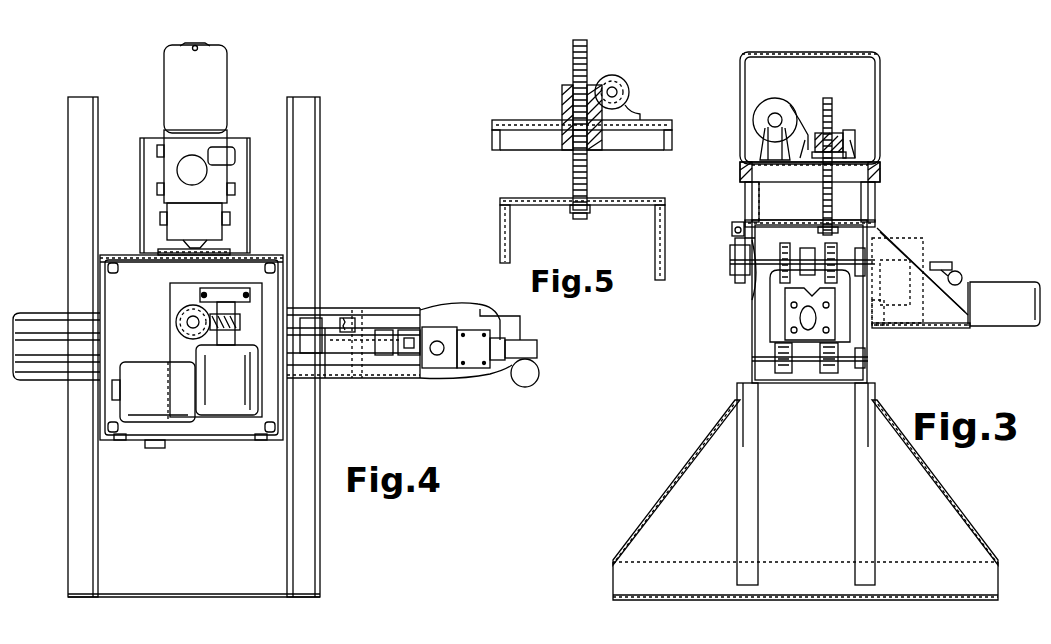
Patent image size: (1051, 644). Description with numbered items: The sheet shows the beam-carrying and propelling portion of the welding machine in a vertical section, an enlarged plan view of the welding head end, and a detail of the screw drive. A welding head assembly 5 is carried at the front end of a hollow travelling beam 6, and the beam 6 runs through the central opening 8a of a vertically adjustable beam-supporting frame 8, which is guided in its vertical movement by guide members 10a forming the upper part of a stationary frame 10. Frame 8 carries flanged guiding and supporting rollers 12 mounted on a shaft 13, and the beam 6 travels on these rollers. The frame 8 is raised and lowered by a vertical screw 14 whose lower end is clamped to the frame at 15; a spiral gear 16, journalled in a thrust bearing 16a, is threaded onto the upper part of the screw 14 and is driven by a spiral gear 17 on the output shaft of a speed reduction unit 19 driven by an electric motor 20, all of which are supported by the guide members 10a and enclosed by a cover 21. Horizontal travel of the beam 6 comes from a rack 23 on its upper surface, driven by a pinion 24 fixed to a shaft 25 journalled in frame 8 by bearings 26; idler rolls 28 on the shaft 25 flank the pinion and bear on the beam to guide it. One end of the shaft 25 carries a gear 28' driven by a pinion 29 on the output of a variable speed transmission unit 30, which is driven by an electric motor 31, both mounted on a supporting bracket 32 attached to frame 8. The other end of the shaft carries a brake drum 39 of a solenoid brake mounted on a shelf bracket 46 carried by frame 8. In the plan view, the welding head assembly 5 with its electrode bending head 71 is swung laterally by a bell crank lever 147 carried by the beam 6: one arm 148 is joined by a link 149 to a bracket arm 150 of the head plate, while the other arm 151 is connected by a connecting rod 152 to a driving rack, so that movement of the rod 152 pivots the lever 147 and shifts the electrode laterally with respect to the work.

In FIG. 4, the welding head assembly 5 is at (525, 318).
In FIG. 4, the travelling beam 6 is at (43, 380).
In FIG. 3, the travelling beam 6 is at (770, 318).
In FIG. 4, the beam-supporting frame 8 is at (205, 440).
In FIG. 5, the beam-supporting frame 8 is at (500, 226).
In FIG. 3, the central opening 8a is at (870, 355).
In FIG. 4, the stationary frame 10 is at (287, 492).
In FIG. 3, the stationary frame 10 is at (735, 405).
In FIG. 4, the guide members 10a is at (100, 274).
In FIG. 3, the guide members 10a is at (745, 195).
In FIG. 3, the flanged guiding and supporting rollers 12 is at (784, 375).
In FIG. 3, the shaft 13 is at (752, 368).
In FIG. 5, the screw 14 is at (573, 167).
In FIG. 3, the screw 14 is at (823, 195).
In FIG. 5, the clamp 15 is at (570, 213).
In FIG. 3, the clamp 15 is at (798, 222).
In FIG. 5, the spiral gear 16 is at (562, 90).
In FIG. 3, the spiral gear 16 is at (845, 138).
In FIG. 5, the thrust bearing 16a is at (562, 133).
In FIG. 5, the spiral gear 17 is at (628, 85).
In FIG. 3, the spiral gear 17 is at (838, 135).
In FIG. 3, the speed reduction unit 19 is at (808, 130).
In FIG. 3, the electric motor 20 is at (775, 98).
In FIG. 3, the cover 21 is at (745, 60).
In FIG. 3, the rack 23 is at (762, 318).
In FIG. 3, the pinion 24 is at (745, 225).
In FIG. 3, the shaft 25 is at (860, 258).
In FIG. 3, the bearings 26 is at (785, 283).
In FIG. 3, the idler rolls 28 is at (811, 248).
In FIG. 3, the gear 28' is at (920, 275).
In FIG. 3, the pinion 29 is at (882, 330).
In FIG. 4, the variable speed transmission unit 30 is at (170, 168).
In FIG. 3, the variable speed transmission unit 30 is at (925, 332).
In FIG. 4, the electric motor 31 is at (175, 104).
In FIG. 3, the electric motor 31 is at (1010, 282).
In FIG. 3, the supporting bracket 32 is at (978, 330).
In FIG. 3, the brake drum 39 is at (735, 270).
In FIG. 3, the shelf bracket 46 is at (752, 290).
In FIG. 4, the electrode bending head 71 is at (480, 355).
In FIG. 4, the bell crank lever 147 is at (340, 310).
In FIG. 4, the arm 148 is at (365, 318).
In FIG. 4, the link 149 is at (392, 320).
In FIG. 4, the bracket arm 150 is at (395, 378).
In FIG. 4, the arm 151 is at (310, 318).
In FIG. 4, the connecting rod 152 is at (340, 378).